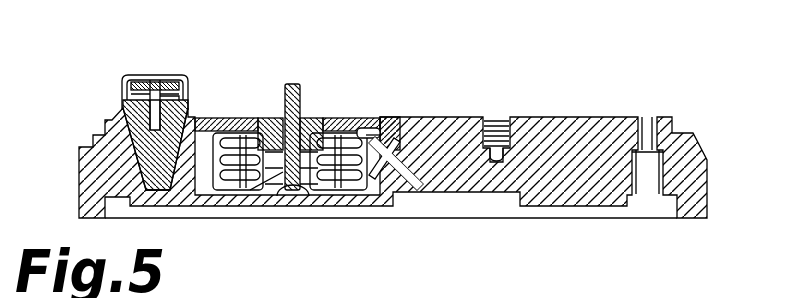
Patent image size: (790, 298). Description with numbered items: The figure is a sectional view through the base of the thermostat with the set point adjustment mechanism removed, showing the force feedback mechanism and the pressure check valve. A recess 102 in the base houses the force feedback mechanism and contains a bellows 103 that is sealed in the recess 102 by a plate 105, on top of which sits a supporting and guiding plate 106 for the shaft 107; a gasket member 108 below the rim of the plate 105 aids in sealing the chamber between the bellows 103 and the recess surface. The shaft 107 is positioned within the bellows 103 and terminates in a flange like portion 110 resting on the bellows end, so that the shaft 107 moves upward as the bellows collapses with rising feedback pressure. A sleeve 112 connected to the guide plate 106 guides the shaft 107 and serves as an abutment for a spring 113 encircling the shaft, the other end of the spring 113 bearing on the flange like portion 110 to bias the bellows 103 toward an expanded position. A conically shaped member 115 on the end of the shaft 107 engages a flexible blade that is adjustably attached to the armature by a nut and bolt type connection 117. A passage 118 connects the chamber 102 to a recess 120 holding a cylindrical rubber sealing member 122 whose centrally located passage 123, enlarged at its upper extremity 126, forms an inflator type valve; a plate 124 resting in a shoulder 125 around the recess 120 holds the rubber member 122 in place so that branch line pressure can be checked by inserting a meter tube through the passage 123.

The recess 120 is at (132, 165).
The cylindrical rubber sealing member 122 is at (133, 105).
The centrally located passage 123 is at (158, 78).
The plate 124 is at (138, 93).
The shoulder 125 is at (124, 78).
The enlarged upper extremity of passage 126 is at (160, 88).
The supporting and guiding plate 106 is at (213, 124).
The spring 113 is at (270, 122).
The shaft 107 is at (292, 84).
The sleeve 112 is at (310, 122).
The flange like portion 110 is at (328, 128).
The bellows 103 is at (352, 130).
The recess 102 is at (377, 128).
The plate 105 is at (372, 120).
The gasket member 108 is at (402, 133).
The conically shaped member 115 is at (408, 178).
The passage 118 is at (177, 177).
The nut and bolt type connection 117 is at (357, 291).